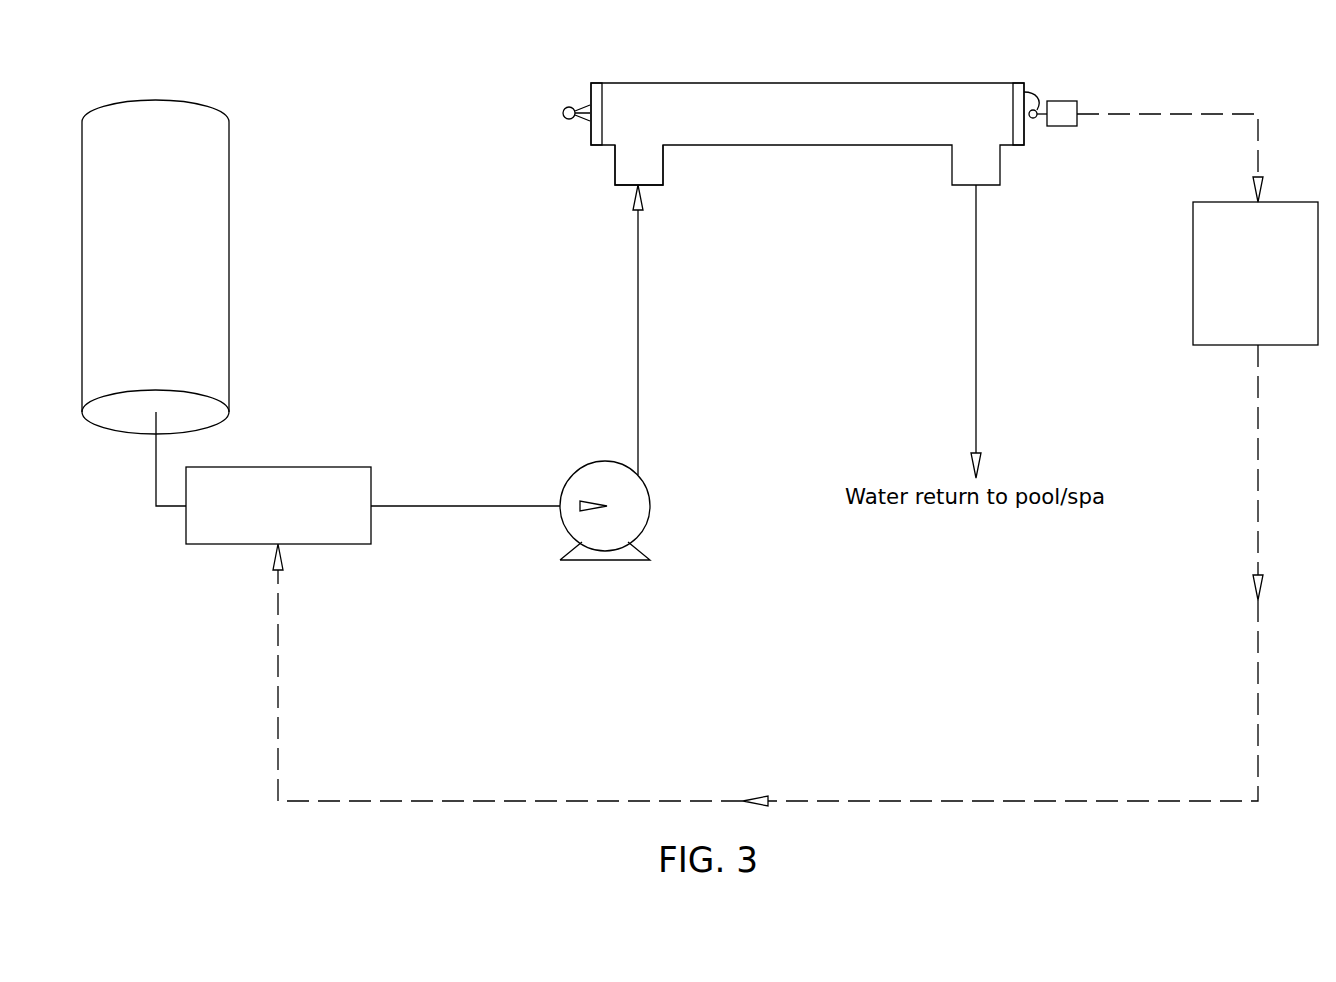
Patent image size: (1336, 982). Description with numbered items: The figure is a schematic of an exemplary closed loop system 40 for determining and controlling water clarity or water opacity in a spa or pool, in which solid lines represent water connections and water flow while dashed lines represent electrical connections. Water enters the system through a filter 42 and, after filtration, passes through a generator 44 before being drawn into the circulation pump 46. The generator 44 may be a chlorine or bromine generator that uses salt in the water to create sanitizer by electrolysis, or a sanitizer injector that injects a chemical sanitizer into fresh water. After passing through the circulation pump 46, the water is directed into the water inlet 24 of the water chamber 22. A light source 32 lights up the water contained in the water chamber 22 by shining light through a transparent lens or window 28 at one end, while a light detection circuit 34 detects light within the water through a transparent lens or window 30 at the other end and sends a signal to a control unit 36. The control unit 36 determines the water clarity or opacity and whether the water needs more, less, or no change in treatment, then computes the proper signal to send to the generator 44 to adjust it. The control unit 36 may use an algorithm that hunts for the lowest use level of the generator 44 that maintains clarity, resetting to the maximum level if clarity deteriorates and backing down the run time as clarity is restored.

The system 40 is at (270, 66).
The water chamber 22 is at (787, 93).
The water inlet 24 is at (632, 162).
The transparent lens 28 is at (591, 82).
The transparent lens 30 is at (1018, 82).
The light source 32 is at (563, 115).
The light detection circuit 34 is at (1063, 101).
The control unit 36 is at (1218, 283).
The filter 42 is at (218, 313).
The generator 44 is at (209, 543).
The circulation pump 46 is at (603, 560).